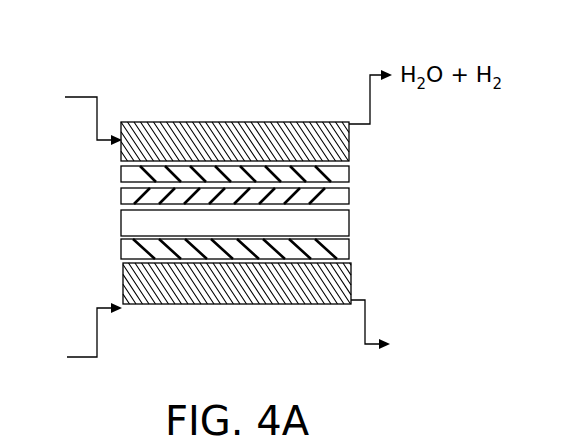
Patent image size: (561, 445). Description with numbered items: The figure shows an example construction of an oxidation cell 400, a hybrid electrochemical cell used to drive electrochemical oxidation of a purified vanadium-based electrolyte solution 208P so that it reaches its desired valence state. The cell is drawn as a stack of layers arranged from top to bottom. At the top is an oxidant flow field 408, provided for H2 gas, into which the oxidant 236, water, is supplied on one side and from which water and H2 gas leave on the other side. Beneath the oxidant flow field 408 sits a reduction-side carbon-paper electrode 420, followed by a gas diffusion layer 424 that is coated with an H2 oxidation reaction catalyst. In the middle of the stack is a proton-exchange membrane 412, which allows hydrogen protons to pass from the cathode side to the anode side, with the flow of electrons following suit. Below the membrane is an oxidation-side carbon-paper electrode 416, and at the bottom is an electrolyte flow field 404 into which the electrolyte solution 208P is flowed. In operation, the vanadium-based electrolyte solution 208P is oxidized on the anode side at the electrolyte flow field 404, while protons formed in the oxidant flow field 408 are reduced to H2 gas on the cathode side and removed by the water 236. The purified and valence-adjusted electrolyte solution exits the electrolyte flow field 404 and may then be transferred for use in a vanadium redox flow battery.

The oxidation cell 400 is at (295, 51).
The oxidant 236 is at (88, 97).
The oxidant flow field 408 is at (349, 138).
The reduction-side carbon-paper electrode 420 is at (120, 170).
The gas diffusion layer 424 is at (349, 195).
The proton-exchange membrane 412 is at (349, 228).
The oxidation-side carbon-paper electrode 416 is at (349, 248).
The electrolyte flow field 404 is at (351, 285).
The purified vanadium-based electrolyte solution 208P is at (97, 338).